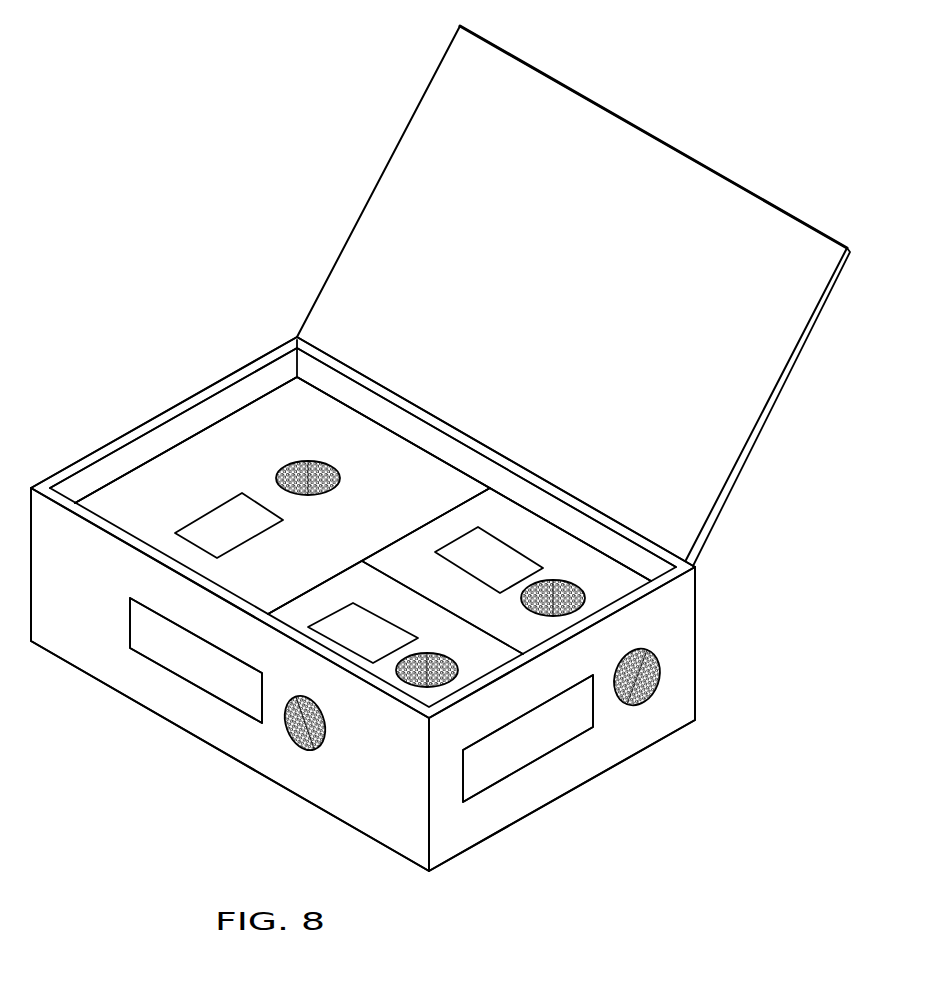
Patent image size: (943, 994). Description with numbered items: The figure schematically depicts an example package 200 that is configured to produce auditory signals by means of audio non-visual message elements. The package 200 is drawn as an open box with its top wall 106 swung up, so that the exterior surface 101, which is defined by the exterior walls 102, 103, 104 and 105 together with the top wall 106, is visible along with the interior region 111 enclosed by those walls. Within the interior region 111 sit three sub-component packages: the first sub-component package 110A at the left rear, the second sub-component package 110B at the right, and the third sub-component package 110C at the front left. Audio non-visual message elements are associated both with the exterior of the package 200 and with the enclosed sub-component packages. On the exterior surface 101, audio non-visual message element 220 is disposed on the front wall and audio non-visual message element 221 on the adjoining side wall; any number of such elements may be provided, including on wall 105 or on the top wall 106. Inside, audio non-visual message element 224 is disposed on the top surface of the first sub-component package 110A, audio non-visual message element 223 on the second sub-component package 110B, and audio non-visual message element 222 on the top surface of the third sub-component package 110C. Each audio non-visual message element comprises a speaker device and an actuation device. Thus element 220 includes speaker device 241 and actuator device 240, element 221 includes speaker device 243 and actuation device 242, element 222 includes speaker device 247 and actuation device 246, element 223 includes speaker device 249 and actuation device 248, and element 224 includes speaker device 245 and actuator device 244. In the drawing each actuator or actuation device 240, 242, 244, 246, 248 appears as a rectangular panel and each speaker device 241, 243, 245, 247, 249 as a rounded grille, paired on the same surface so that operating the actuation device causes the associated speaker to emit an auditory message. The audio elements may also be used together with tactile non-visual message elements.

The package 200 is at (438, 448).
The exterior surface 101 is at (71, 457).
The exterior wall 102 is at (92, 666).
The exterior wall 103 is at (507, 820).
The exterior wall 104 is at (417, 422).
The exterior wall 105 is at (242, 365).
The top wall 106 is at (365, 210).
The interior region 111 is at (203, 413).
The first sub-component package 110A is at (166, 443).
The second sub-component package 110B is at (538, 508).
The third sub-component package 110C is at (392, 598).
The audio non-visual message element 222 is at (365, 598).
The audio non-visual message element 223 is at (493, 525).
The audio non-visual message element 224 is at (340, 460).
The audio non-visual message element 220 is at (230, 720).
The audio non-visual message element 221 is at (653, 760).
The actuator device 240 is at (200, 690).
The speaker device 241 is at (312, 750).
The actuation device 242 is at (578, 737).
The speaker device 243 is at (660, 672).
The actuator device 244 is at (227, 503).
The speaker device 245 is at (307, 461).
The actuation device 246 is at (328, 608).
The speaker device 247 is at (412, 688).
The actuation device 248 is at (532, 560).
The speaker device 249 is at (575, 580).